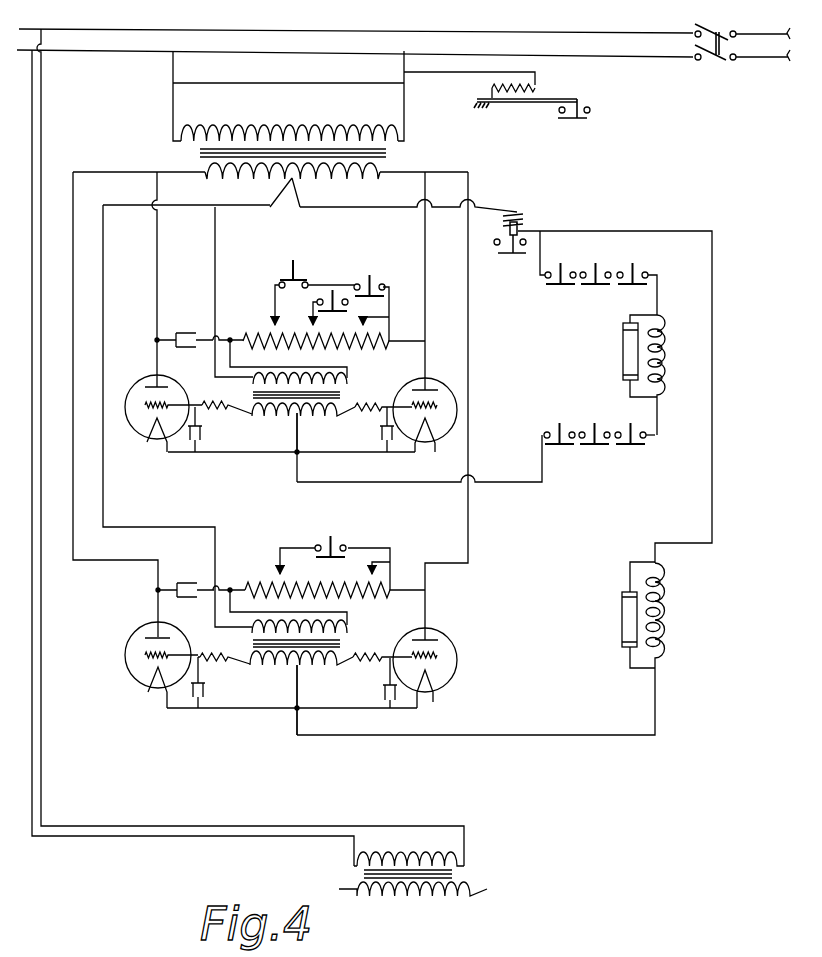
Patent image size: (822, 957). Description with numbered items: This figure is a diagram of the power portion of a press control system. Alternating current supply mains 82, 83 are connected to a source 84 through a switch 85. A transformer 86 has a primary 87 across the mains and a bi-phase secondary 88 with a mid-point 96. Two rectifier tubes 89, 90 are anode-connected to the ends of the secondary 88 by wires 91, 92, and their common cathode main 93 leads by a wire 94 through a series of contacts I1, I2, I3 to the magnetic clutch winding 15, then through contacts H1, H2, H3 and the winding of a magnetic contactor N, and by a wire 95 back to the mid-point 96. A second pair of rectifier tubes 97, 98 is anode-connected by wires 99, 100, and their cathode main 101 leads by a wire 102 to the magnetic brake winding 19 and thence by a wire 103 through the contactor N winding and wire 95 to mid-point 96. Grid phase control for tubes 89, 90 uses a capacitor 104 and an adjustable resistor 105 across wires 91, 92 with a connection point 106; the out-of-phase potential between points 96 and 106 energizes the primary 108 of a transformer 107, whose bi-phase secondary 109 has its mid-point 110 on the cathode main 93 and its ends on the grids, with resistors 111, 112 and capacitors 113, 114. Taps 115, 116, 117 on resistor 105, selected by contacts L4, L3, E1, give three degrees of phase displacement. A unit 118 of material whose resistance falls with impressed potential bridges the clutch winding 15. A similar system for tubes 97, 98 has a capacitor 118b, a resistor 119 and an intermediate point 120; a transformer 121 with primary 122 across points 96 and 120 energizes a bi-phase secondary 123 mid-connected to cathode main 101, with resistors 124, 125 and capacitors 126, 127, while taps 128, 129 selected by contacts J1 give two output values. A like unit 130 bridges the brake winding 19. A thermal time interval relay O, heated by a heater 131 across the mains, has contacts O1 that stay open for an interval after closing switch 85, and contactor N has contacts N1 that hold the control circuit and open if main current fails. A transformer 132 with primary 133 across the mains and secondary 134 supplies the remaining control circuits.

The alternating current supply main 82 is at (620, 28).
The alternating current supply main 83 is at (626, 52).
The source 84 is at (763, 44).
The switch 85 is at (713, 56).
The transformer 86 is at (392, 150).
The primary 87 is at (359, 124).
The bi-phase secondary 88 is at (347, 182).
The mid-point 96 is at (296, 182).
The rectifier tube 89 is at (136, 383).
The rectifier tube 90 is at (433, 380).
The wire 91 is at (158, 274).
The wire 92 is at (426, 258).
The common cathode main 93 is at (262, 456).
The wire 94 is at (393, 483).
The wire 95 is at (403, 208).
The rectifier tube 97 is at (137, 632).
The rectifier tube 98 is at (452, 644).
The wire 99 is at (74, 544).
The wire 100 is at (467, 544).
The common cathode main 101 is at (250, 712).
The wire 102 is at (570, 732).
The wire 103 is at (713, 484).
The capacitor 104 is at (186, 333).
The adjustable resistor 105 is at (352, 348).
The connection point 106 is at (230, 340).
The transformer 107 is at (341, 398).
The primary 108 is at (252, 386).
The bi-phase secondary 109 is at (272, 418).
The mid-point 110 is at (298, 415).
The resistor 111 is at (212, 412).
The resistor 112 is at (368, 412).
The capacitor 113 is at (203, 436).
The capacitor 114 is at (380, 438).
The adjustable tap 115 is at (366, 326).
The adjustable tap 116 is at (317, 328).
The adjustable tap 117 is at (278, 328).
The unit of voltage-dependent resistance material 118 is at (626, 358).
The capacitor 118b is at (186, 583).
The resistor 119 is at (357, 598).
The intermediate point 120 is at (230, 590).
The transformer 121 is at (343, 644).
The primary 122 is at (252, 636).
The bi-phase secondary 123 is at (275, 668).
The resistor 124 is at (206, 663).
The resistor 125 is at (368, 662).
The capacitor 126 is at (205, 692).
The capacitor 127 is at (382, 695).
The adjustable tap 128 is at (366, 570).
The adjustable tap 129 is at (287, 572).
The unit of voltage-dependent resistance material 130 is at (620, 621).
The heater 131 is at (532, 86).
The transformer 132 is at (455, 876).
The primary 133 is at (428, 855).
The secondary 134 is at (420, 882).
The magnetic clutch winding 15 is at (664, 358).
The magnetic brake winding 19 is at (668, 625).
The time interval relay O is at (542, 105).
The contacts O1 is at (592, 110).
The magnetic contactor N is at (525, 218).
The contacts N1 is at (493, 244).
The contact H1 is at (556, 264).
The contact H2 is at (599, 264).
The contact H3 is at (646, 258).
The contact I1 is at (559, 428).
The contact I2 is at (596, 426).
The contact I3 is at (633, 426).
The contact L3 is at (343, 308).
The contact L4 is at (316, 282).
The contact E1 is at (373, 283).
The contact J1 is at (328, 544).